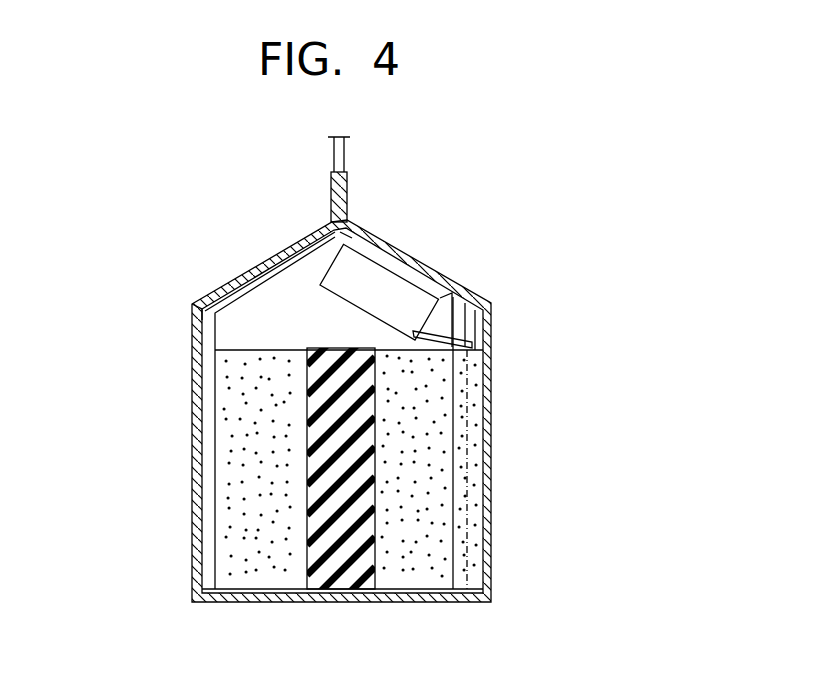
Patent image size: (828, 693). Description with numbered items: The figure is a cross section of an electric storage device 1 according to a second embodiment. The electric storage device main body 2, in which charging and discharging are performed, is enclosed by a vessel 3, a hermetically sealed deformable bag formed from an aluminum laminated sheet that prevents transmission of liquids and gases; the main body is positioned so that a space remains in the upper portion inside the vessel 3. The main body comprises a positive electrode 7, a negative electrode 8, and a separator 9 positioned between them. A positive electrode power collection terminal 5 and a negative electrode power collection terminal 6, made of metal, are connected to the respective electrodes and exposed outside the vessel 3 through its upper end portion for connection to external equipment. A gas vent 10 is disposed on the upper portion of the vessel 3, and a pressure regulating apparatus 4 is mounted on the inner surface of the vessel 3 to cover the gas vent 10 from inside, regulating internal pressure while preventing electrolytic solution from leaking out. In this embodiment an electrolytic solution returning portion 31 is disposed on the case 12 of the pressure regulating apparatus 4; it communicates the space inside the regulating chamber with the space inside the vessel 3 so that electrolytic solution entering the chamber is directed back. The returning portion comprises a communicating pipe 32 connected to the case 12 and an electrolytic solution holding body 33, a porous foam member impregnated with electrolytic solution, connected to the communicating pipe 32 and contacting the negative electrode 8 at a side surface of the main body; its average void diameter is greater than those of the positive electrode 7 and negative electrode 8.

The electric storage device 1 is at (364, 406).
The electric storage device main body 2 is at (270, 352).
The vessel 3 is at (232, 282).
The pressure regulating apparatus 4 is at (372, 328).
The positive electrode power collection terminal 5 is at (193, 305).
The negative electrode power collection terminal 6 is at (478, 337).
The positive electrode 7 is at (245, 582).
The negative electrode 8 is at (428, 582).
The separator 9 is at (345, 565).
The gas vent 10 is at (405, 253).
The case 12 is at (327, 258).
The electrolytic solution returning portion 31 is at (478, 338).
The communicating pipe 32 is at (462, 323).
The electrolytic solution holding body 33 is at (477, 435).